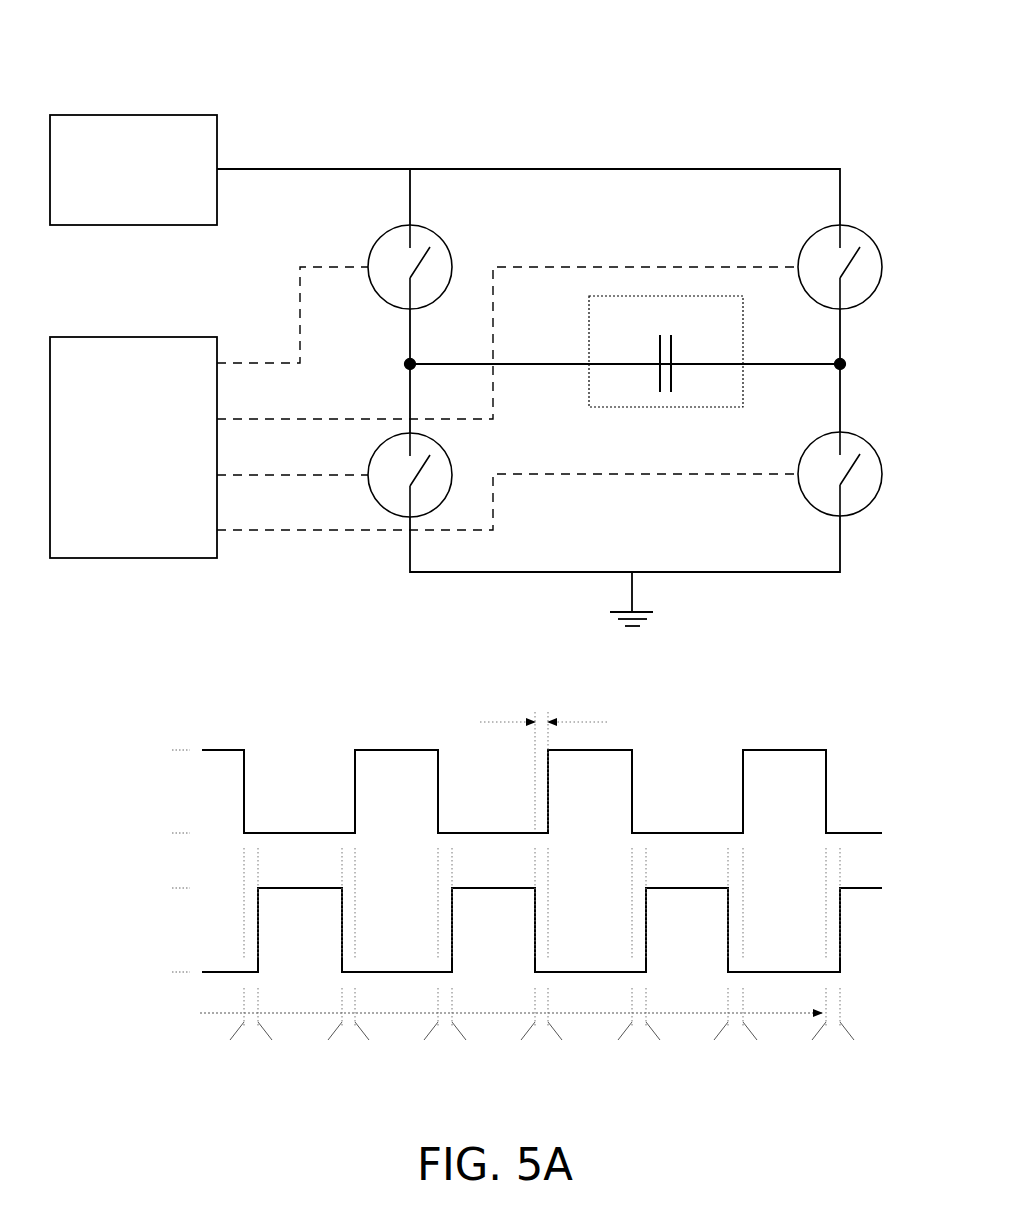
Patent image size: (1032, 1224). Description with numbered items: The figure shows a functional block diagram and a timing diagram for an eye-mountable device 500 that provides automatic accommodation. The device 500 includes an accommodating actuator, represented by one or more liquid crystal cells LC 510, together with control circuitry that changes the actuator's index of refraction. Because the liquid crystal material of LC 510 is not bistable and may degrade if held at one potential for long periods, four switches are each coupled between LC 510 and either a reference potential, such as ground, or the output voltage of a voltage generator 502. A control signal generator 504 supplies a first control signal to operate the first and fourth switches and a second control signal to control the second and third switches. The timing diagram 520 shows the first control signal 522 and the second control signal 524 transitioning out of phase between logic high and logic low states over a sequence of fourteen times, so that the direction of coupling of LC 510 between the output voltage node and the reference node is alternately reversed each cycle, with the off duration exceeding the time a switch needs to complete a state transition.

The eye-mountable device 500 is at (612, 70).
The voltage generator 502 is at (133, 170).
The control signal generator 504 is at (133, 447).
The liquid crystal cells 510 is at (666, 351).
The timing diagram 520 is at (806, 708).
The control signal Φ1 522 is at (471, 791).
The control signal Φ2 524 is at (471, 930).